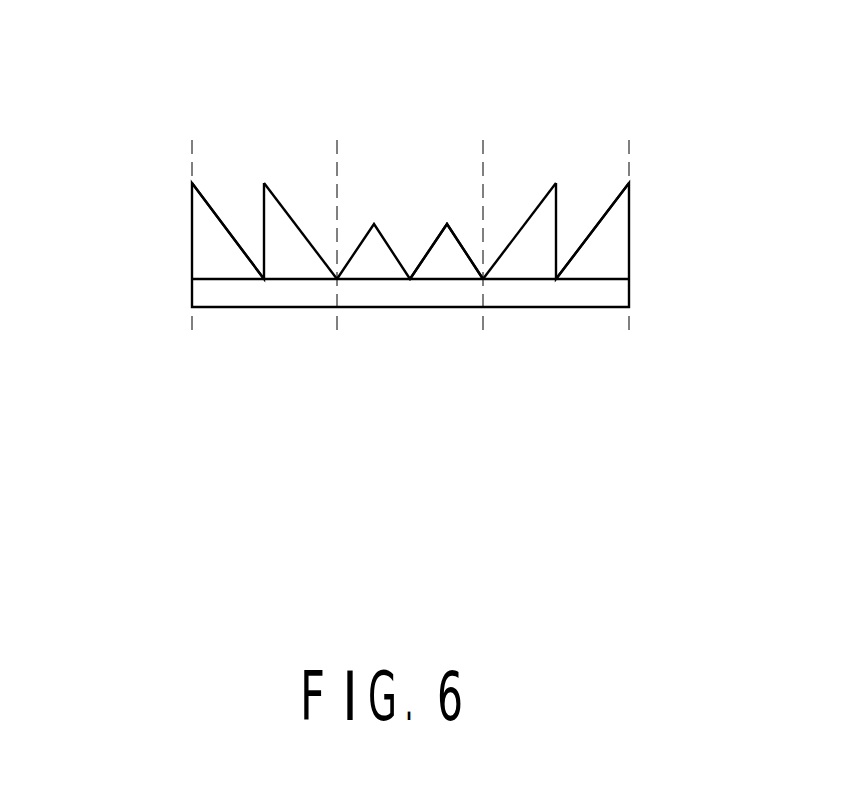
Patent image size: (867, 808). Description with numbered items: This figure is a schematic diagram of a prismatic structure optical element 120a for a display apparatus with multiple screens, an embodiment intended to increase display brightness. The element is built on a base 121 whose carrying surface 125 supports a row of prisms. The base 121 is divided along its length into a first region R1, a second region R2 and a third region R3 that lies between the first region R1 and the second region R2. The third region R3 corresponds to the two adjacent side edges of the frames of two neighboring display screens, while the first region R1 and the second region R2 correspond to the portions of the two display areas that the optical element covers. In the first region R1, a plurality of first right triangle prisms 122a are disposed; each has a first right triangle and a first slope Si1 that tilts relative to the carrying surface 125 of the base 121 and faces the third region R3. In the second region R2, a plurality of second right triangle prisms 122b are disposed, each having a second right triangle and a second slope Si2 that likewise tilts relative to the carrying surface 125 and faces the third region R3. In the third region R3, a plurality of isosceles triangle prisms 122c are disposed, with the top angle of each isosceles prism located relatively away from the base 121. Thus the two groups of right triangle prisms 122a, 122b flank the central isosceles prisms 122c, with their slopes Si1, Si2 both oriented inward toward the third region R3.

The prismatic structure optical element 120a is at (155, 58).
The base 121 is at (613, 293).
The carrying surface 125 is at (513, 280).
The first right triangle prisms 122a is at (192, 236).
The second right triangle prisms 122b is at (624, 237).
The isosceles triangle prisms 122c is at (427, 270).
The first slope Si1 is at (236, 237).
The second slope Si2 is at (587, 238).
The first region R1 is at (337, 137).
The second region R2 is at (629, 137).
The third region R3 is at (483, 137).